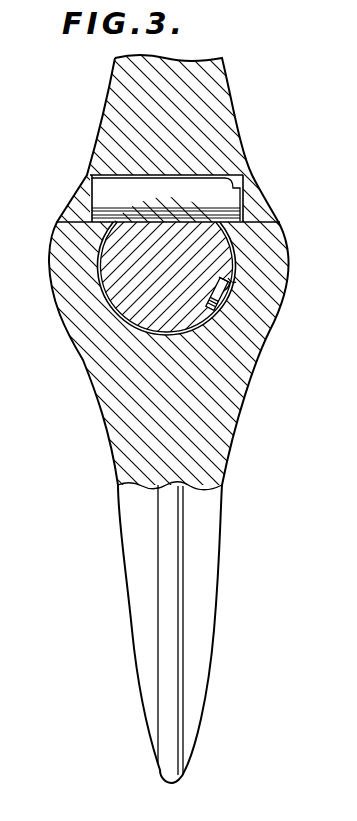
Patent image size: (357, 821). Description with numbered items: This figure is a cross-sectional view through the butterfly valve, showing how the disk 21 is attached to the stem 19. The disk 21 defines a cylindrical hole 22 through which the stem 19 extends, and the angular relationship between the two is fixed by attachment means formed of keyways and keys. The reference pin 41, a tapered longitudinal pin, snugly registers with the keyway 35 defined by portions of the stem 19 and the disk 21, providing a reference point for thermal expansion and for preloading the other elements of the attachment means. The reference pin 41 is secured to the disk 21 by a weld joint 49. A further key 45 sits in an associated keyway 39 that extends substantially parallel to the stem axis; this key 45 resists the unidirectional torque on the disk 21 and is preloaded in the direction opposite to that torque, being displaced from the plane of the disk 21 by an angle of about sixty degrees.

The disk 21 is at (195, 90).
The reference pin 41 is at (202, 190).
The weld joints 49 is at (89, 221).
The keyway 35 is at (207, 220).
The stem 19 is at (212, 247).
The cylindrical hole 22 is at (100, 289).
The keyway 39 is at (228, 288).
The key 45 is at (218, 301).